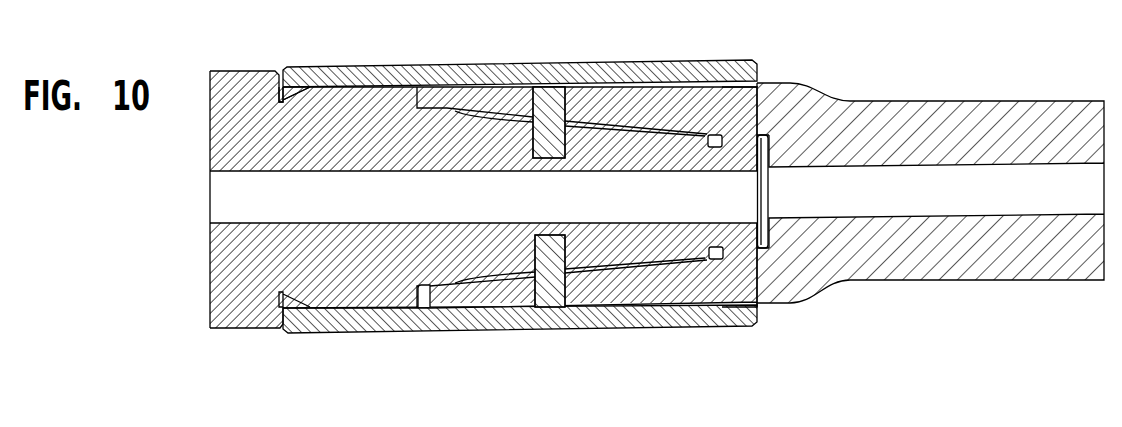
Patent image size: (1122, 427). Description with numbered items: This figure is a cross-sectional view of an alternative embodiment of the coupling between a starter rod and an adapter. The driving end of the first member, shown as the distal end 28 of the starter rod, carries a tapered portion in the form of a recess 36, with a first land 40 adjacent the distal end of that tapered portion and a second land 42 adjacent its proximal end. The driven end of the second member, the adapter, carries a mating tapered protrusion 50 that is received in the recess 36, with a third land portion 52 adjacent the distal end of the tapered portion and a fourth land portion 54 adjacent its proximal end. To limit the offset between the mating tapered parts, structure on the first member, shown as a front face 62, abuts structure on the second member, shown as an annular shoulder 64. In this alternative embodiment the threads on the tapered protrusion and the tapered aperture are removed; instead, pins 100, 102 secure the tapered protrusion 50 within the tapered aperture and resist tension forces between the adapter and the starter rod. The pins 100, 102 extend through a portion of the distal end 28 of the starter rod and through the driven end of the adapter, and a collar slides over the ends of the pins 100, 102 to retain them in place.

The distal end of the starter rod 28 is at (857, 115).
The recess 36 is at (525, 290).
The first land 40 is at (430, 295).
The second land 42 is at (737, 252).
The protrusion 50 is at (572, 143).
The third land portion 52 is at (742, 150).
The fourth land portion 54 is at (347, 105).
The front face 62 is at (289, 75).
The annular shoulder 64 is at (270, 73).
The pin 100 is at (557, 290).
The pin 102 is at (549, 103).